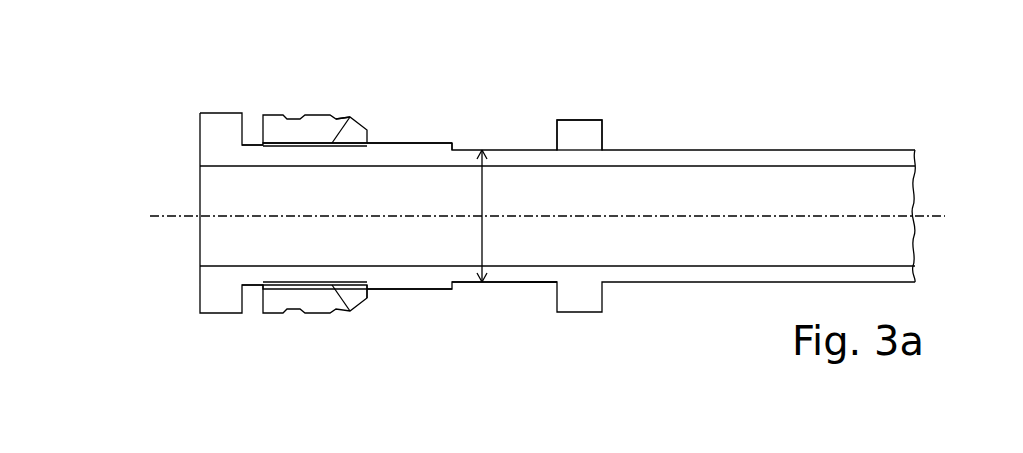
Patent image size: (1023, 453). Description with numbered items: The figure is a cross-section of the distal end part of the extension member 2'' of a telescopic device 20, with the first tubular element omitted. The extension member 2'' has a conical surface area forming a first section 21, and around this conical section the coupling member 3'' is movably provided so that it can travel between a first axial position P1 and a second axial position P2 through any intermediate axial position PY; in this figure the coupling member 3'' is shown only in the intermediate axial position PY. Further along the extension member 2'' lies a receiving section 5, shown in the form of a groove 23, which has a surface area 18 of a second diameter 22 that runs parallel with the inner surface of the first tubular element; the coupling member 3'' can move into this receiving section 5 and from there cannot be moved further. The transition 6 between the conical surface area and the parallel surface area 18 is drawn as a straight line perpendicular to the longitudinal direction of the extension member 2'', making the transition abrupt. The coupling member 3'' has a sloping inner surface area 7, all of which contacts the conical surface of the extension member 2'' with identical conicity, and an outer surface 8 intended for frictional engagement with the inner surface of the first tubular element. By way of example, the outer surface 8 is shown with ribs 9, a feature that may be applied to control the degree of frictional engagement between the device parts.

The telescopic device 20 is at (813, 115).
The extension member 2'' is at (604, 209).
The coupling member 3'' is at (282, 99).
The receiving section 5 is at (518, 148).
The transition 6 is at (452, 148).
The sloping inner surface area 7 is at (367, 308).
The outer surface 8 is at (272, 317).
The ribs 9 is at (307, 315).
The surface area 18 is at (502, 290).
The first section 21 is at (430, 293).
The second diameter 22 is at (482, 232).
The groove 23 is at (537, 288).
The first axial position P1 is at (253, 145).
The second axial position P2 is at (433, 142).
The intermediate axial position PY is at (340, 118).